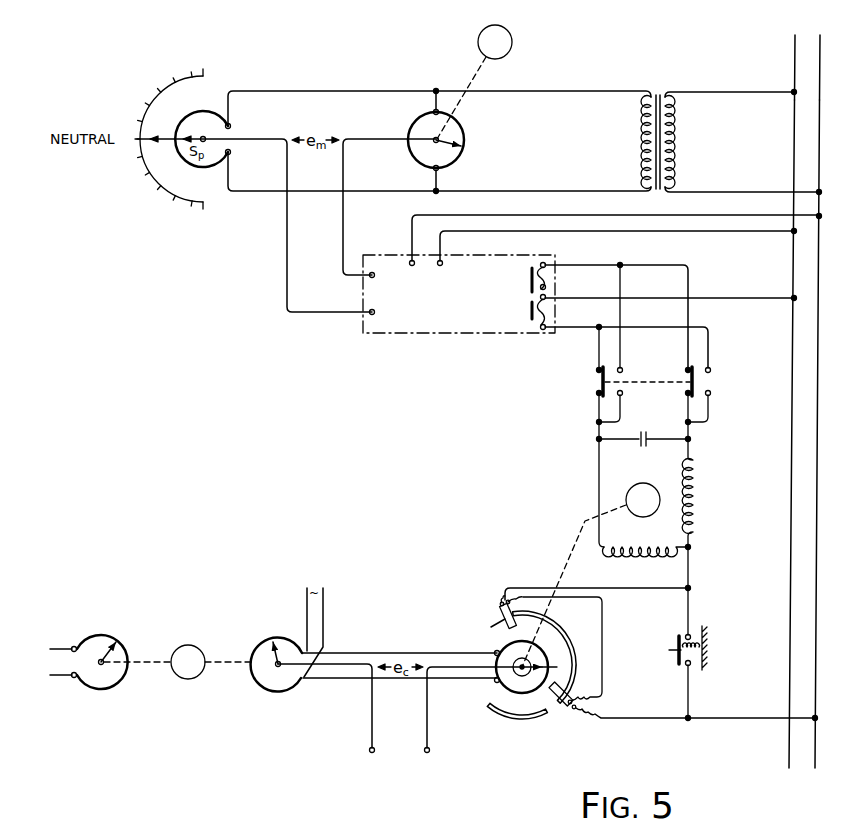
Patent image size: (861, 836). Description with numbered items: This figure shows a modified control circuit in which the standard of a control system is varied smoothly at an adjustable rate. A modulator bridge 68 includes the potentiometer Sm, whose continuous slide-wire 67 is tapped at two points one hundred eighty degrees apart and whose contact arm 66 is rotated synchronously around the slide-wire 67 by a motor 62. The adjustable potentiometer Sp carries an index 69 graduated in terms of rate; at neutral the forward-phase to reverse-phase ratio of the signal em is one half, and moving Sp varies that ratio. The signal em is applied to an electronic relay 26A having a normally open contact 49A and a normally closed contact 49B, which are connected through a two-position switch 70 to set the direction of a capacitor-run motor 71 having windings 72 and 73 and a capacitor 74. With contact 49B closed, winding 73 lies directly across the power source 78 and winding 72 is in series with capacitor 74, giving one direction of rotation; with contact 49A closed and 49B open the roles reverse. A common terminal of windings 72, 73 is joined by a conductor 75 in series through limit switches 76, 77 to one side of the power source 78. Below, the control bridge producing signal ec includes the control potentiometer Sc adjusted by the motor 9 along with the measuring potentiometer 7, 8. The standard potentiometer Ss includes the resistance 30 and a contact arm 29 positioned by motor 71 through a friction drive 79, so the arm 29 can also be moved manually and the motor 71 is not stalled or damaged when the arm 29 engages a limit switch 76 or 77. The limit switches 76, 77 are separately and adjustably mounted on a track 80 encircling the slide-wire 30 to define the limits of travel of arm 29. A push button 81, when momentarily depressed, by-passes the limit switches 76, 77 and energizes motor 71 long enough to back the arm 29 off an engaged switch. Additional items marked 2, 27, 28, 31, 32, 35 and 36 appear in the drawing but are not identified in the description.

The power supply lines 2 is at (808, 65).
The measuring potentiometer 7 is at (97, 690).
The measuring potentiometer 8 is at (107, 654).
The motor 9 is at (192, 680).
The selsyn rotor 27 is at (276, 651).
The control selsyn Sc 28 is at (283, 691).
The contact arm 29 is at (540, 664).
The slide-wire resistance 30 is at (500, 649).
The stator lead 31 is at (333, 652).
The stator lead 32 is at (333, 680).
The output terminal 35 is at (330, 718).
The output terminal 36 is at (469, 719).
The electronic relay 26A is at (592, 274).
The normally open contact 49A is at (511, 280).
The normally closed contact 49B is at (513, 312).
The motor 62 is at (512, 44).
The contact arm 66 is at (451, 147).
The slide-wire 67 is at (462, 153).
The modulator bridge 68 is at (340, 110).
The index 69 is at (166, 191).
The two-position switch 70 is at (662, 372).
The capacitor-run motor 71 is at (589, 493).
The winding 72 is at (694, 513).
The winding 73 is at (634, 556).
The capacitor 74 is at (643, 428).
The conductor 75 is at (623, 591).
The limit switch 76 is at (500, 613).
The limit switch 77 is at (558, 705).
The power source 78 is at (815, 638).
The friction drive 79 is at (514, 663).
The track 80 is at (535, 721).
The push button 81 is at (676, 658).